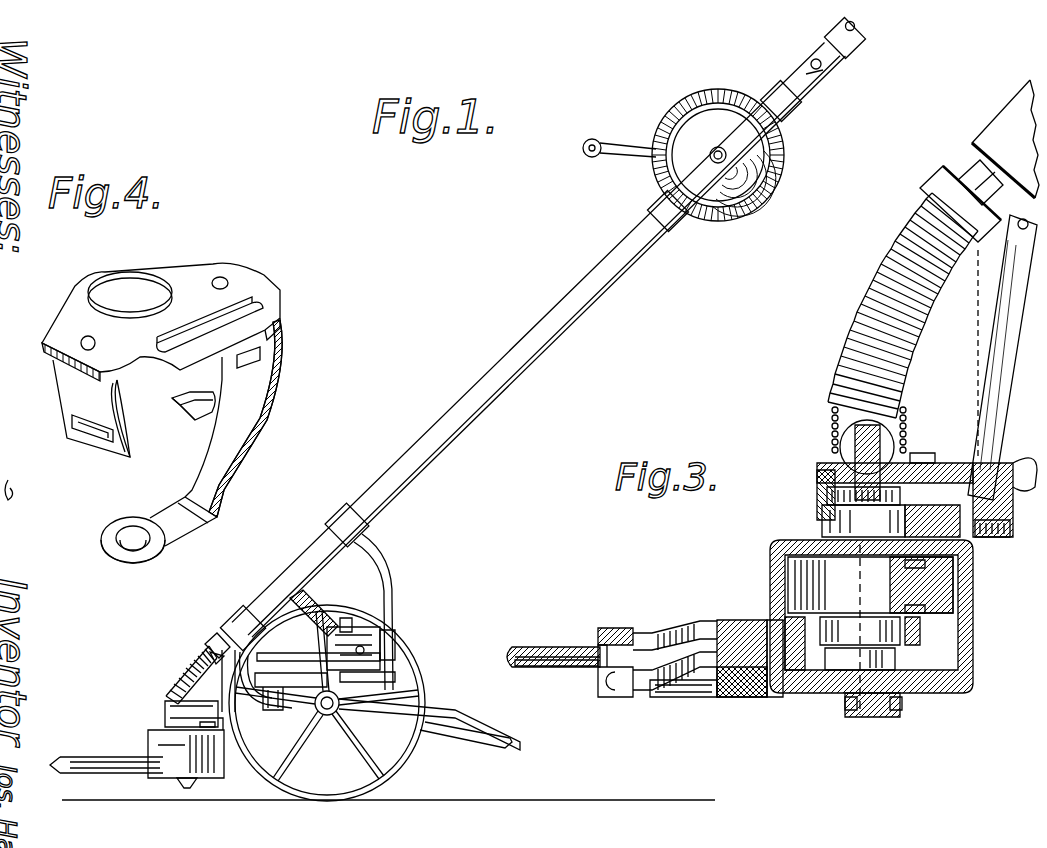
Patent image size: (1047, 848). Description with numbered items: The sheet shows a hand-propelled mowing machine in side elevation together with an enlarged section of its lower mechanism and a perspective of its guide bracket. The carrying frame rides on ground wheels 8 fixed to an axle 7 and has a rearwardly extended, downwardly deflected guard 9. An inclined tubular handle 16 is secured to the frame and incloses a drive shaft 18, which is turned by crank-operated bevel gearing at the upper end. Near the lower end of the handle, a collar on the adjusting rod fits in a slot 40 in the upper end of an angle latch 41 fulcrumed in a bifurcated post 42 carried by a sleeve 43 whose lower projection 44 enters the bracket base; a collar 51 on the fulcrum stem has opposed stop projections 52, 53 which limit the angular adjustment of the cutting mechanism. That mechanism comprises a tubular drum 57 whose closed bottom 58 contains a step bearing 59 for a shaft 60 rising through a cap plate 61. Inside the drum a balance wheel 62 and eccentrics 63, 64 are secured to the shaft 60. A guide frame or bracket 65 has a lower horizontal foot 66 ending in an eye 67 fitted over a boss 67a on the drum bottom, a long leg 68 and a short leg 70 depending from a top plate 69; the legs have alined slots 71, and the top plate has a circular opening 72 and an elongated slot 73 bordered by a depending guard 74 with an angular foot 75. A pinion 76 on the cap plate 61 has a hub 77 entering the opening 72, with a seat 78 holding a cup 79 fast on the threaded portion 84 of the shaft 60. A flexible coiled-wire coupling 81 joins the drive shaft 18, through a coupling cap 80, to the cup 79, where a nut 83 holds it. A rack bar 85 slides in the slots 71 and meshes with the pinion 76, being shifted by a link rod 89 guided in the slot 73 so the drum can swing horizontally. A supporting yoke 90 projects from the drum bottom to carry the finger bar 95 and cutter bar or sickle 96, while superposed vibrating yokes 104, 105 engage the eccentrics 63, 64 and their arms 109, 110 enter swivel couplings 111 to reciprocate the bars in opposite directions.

In FIG. 1, the axle 7 is at (429, 724).
In FIG. 1, the ground wheels 8 is at (412, 758).
In FIG. 1, the guard 9 is at (505, 740).
In FIG. 1, the tubular handle 16 is at (502, 362).
In FIG. 3, the tubular handle 16 is at (1000, 118).
In FIG. 3, the drive shaft 18 is at (975, 175).
In FIG. 1, the slot 40 is at (272, 612).
In FIG. 1, the angle latch 41 is at (314, 604).
In FIG. 1, the bifurcated post 42 is at (340, 625).
In FIG. 1, the sleeve 43 is at (318, 643).
In FIG. 1, the lower projection 44 is at (274, 701).
In FIG. 1, the collar 51 is at (398, 662).
In FIG. 1, the stop projection 52 is at (395, 642).
In FIG. 1, the stop projection 53 is at (398, 678).
In FIG. 1, the tubular drum 57 is at (228, 760).
In FIG. 3, the tubular drum 57 is at (975, 666).
In FIG. 3, the closed bottom 58 is at (930, 693).
In FIG. 3, the step bearing 59 is at (846, 705).
In FIG. 3, the shaft 60 is at (880, 715).
In FIG. 3, the cap plate 61 is at (790, 560).
In FIG. 3, the balance wheel 62 is at (800, 586).
In FIG. 3, the eccentric 63 is at (905, 630).
In FIG. 3, the eccentric 64 is at (900, 658).
In FIG. 4, the guide frame or bracket 65 is at (48, 384).
In FIG. 4, the lower horizontal foot 66 is at (185, 525).
In FIG. 4, the eye 67 is at (137, 565).
In FIG. 1, the eye 67 is at (183, 791).
In FIG. 3, the eye 67 is at (847, 697).
In FIG. 3, the boss 67a is at (866, 715).
In FIG. 4, the leg 68 is at (267, 425).
In FIG. 4, the top plate 69 is at (180, 280).
In FIG. 3, the top plate 69 is at (945, 465).
In FIG. 4, the leg 70 is at (72, 408).
In FIG. 4, the slots 71 is at (100, 433).
In FIG. 4, the circular opening 72 is at (85, 298).
In FIG. 4, the elongated slot 73 is at (232, 308).
In FIG. 4, the guard 74 is at (244, 443).
In FIG. 3, the guard 74 is at (1010, 512).
In FIG. 4, the angular foot 75 is at (180, 410).
In FIG. 3, the angular foot 75 is at (1010, 535).
In FIG. 1, the pinion 76 is at (163, 720).
In FIG. 3, the pinion 76 is at (820, 528).
In FIG. 1, the hub 77 is at (163, 712).
In FIG. 3, the hub 77 is at (830, 510).
In FIG. 3, the seat 78 is at (828, 495).
In FIG. 3, the cup 79 is at (905, 455).
In FIG. 1, the coupling cap 80 is at (205, 646).
In FIG. 3, the coupling cap 80 is at (940, 178).
In FIG. 1, the coupling 81 is at (172, 672).
In FIG. 3, the coupling 81 is at (908, 228).
In FIG. 3, the expanding member or nut 83 is at (892, 420).
In FIG. 3, the threaded portion 84 is at (862, 425).
In FIG. 3, the rack bar 85 is at (962, 528).
In FIG. 3, the link rod 89 is at (992, 470).
In FIG. 1, the supporting yoke 90 is at (150, 773).
In FIG. 3, the supporting yoke 90 is at (712, 693).
In FIG. 3, the finger bar 95 is at (560, 650).
In FIG. 3, the cutter bar or sickle 96 is at (570, 667).
In FIG. 3, the vibrating yoke 104 is at (805, 618).
In FIG. 3, the vibrating yoke 105 is at (750, 690).
In FIG. 3, the arm 109 is at (668, 634).
In FIG. 3, the arm 110 is at (660, 690).
In FIG. 3, the swivel couplings 111 is at (612, 628).